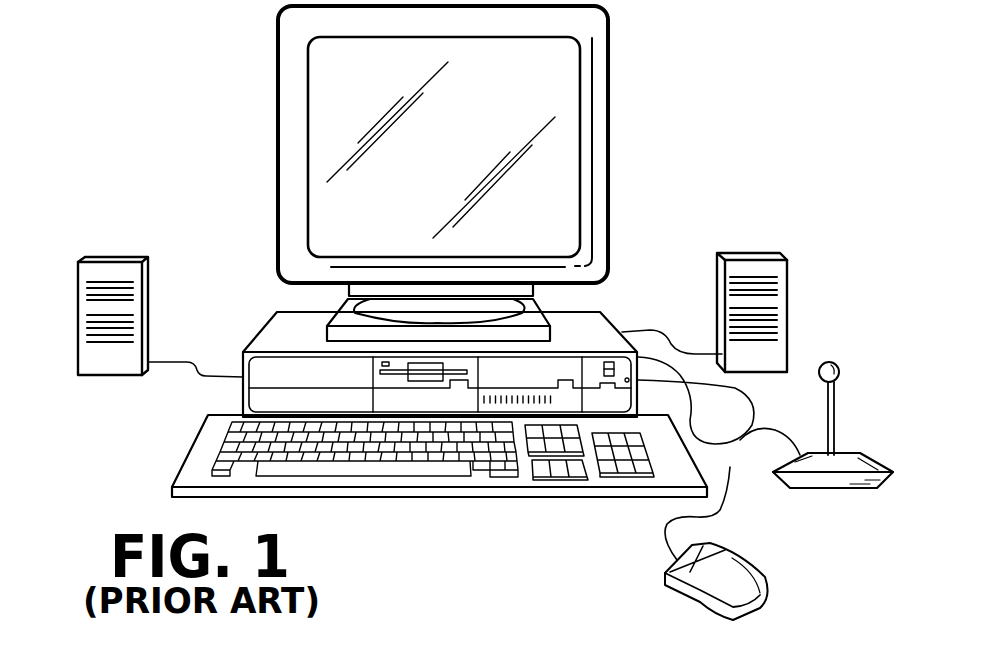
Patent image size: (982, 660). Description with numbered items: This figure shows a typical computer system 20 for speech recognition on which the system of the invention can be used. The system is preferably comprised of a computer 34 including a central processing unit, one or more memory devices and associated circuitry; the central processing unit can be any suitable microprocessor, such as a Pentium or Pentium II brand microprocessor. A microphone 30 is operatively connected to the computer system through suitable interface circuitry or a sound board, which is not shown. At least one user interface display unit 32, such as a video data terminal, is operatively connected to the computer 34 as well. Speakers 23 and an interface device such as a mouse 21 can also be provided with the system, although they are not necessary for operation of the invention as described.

The computer system 20 is at (633, 205).
The user interface display unit 32 is at (278, 44).
The computer 34 is at (243, 352).
The speakers 23 is at (107, 255).
The microphone 30 is at (808, 490).
The mouse 21 is at (668, 565).